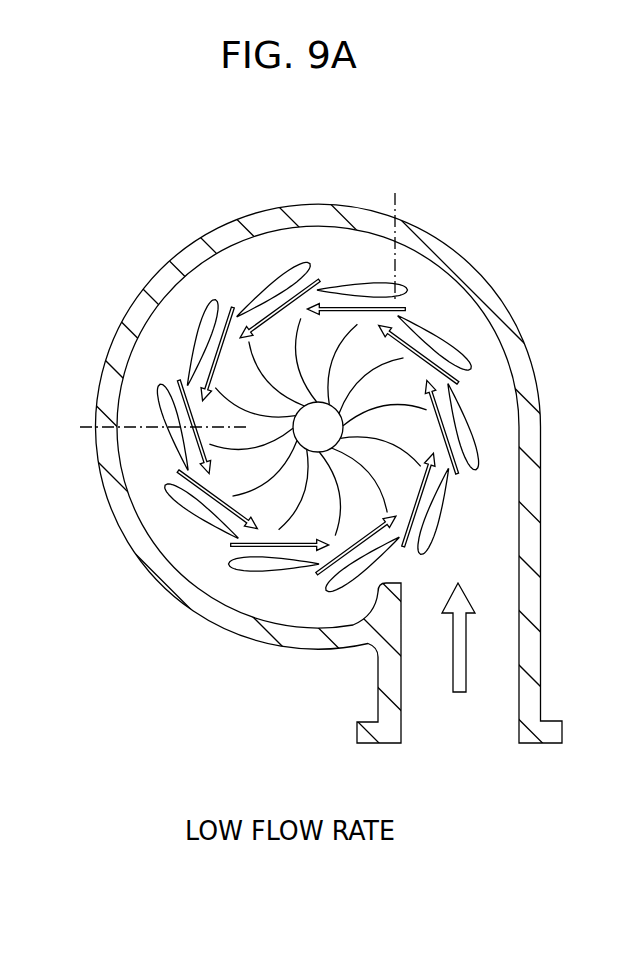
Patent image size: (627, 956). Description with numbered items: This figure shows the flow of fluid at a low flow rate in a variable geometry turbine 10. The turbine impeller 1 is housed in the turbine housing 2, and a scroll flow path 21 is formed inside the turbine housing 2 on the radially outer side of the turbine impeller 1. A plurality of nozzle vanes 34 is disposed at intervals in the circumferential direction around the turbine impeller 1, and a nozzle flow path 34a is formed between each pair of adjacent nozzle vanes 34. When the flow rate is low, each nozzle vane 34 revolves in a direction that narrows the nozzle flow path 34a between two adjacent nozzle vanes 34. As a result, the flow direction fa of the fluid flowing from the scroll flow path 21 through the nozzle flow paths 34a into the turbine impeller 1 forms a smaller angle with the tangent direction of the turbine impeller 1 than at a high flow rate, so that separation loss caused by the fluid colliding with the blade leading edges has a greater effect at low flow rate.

The variable geometry turbine 10 is at (144, 157).
The turbine impeller 1 is at (339, 330).
The turbine housing 2 is at (482, 282).
The scroll flow path 21 is at (514, 417).
The nozzle vane 34 is at (472, 357).
The nozzle flow path 34a is at (458, 317).
The flow direction at low flow rate fa is at (401, 556).